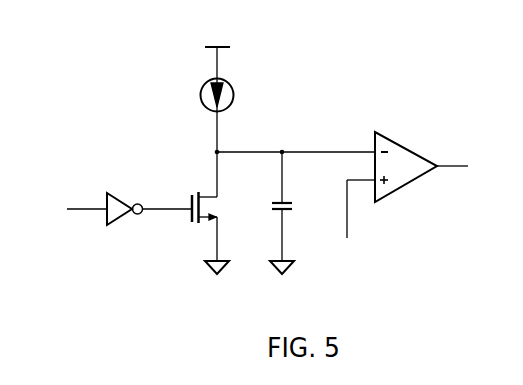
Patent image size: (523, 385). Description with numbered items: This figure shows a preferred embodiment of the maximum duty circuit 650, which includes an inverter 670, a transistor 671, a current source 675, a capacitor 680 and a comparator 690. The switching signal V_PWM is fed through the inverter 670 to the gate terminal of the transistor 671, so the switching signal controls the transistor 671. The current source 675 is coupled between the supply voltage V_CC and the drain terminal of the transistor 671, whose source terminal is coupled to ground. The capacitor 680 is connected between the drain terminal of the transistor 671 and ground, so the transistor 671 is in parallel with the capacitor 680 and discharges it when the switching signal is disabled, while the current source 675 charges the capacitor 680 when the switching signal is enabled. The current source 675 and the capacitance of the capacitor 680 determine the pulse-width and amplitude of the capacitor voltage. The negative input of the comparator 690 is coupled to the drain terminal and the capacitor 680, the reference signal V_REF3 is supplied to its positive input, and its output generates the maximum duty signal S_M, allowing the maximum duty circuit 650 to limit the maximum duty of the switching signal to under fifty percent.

The maximum duty circuit 650 is at (505, 38).
The inverter 670 is at (125, 197).
The transistor 671 is at (224, 233).
The current source 675 is at (197, 95).
The capacitor 680 is at (299, 213).
The comparator 690 is at (406, 163).